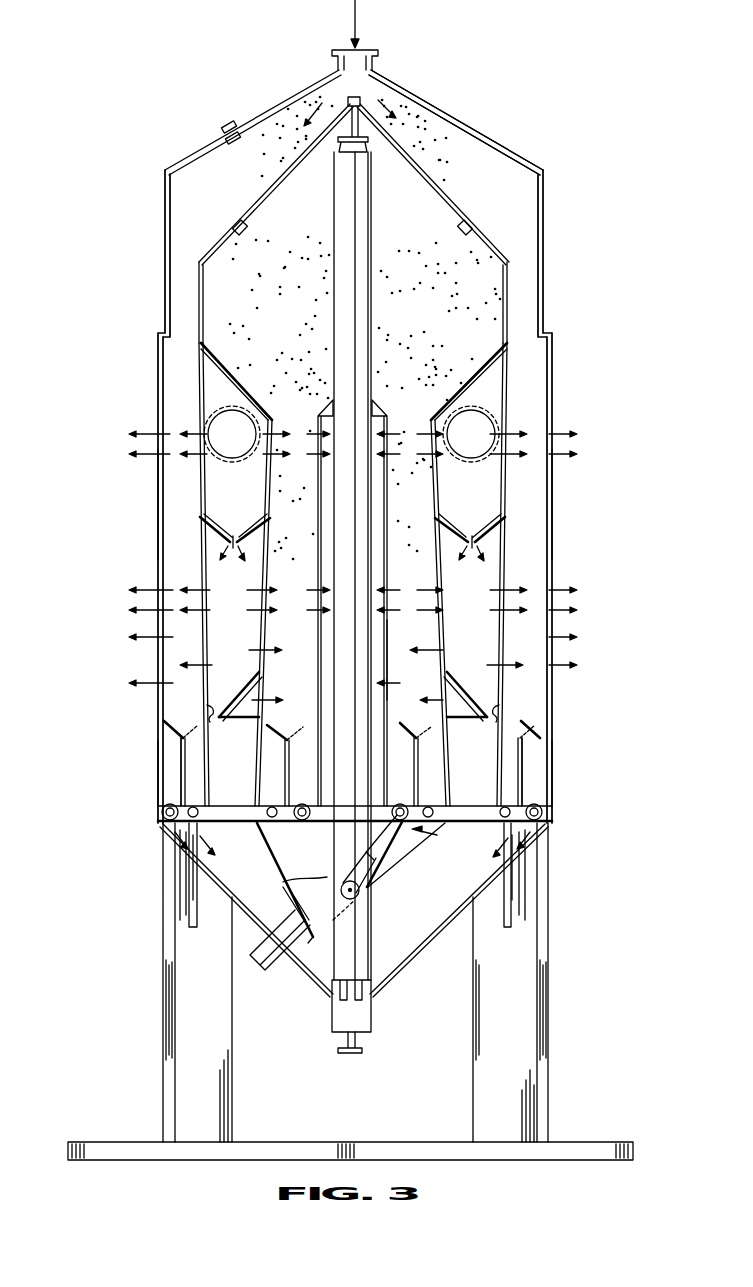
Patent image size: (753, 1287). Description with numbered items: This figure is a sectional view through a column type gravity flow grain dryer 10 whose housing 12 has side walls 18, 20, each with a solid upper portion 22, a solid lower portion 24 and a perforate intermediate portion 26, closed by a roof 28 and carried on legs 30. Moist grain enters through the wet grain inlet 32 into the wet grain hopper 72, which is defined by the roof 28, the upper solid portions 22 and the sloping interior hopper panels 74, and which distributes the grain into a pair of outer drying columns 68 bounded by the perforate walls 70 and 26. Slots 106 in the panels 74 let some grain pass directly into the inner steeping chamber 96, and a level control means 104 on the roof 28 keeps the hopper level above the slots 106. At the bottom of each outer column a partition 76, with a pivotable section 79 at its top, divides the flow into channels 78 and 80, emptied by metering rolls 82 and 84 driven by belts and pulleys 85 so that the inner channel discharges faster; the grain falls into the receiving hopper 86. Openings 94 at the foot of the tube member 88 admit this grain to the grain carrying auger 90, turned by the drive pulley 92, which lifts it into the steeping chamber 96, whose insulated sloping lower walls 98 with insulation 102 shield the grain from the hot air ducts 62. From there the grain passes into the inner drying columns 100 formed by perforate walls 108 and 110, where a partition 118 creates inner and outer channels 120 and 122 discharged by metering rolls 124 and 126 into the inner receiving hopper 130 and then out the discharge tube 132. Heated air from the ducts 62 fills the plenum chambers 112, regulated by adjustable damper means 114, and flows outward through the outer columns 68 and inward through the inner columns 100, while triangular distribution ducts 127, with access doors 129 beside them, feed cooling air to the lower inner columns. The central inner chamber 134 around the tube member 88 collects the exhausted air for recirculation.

The dryer 10 is at (418, 70).
The housing 12 is at (558, 288).
The side wall 18 is at (552, 402).
The side wall 20 is at (158, 376).
The upper solid portion 22 is at (166, 272).
The lower solid portion 24 is at (160, 777).
The perforate intermediate portion 26 is at (160, 510).
The roof 28 is at (472, 133).
The legs 30 is at (175, 942).
The wet grain inlet 32 is at (367, 50).
The hot air duct 62 is at (236, 412).
The outer drying column 68 is at (172, 414).
The perforate wall 70 is at (200, 488).
The wet grain hopper 72 is at (502, 175).
The sloping interior hopper panel 74 is at (303, 155).
The partition 76 is at (160, 766).
The channel 78 is at (160, 786).
The pivotable section 79 is at (176, 731).
The channel 80 is at (170, 726).
The metering roll 82 is at (162, 814).
The metering roll 84 is at (178, 835).
The drive belts and pulleys 85 is at (439, 839).
The receiving hopper 86 is at (427, 932).
The tube member 88 is at (369, 913).
The grain carrying auger 90 is at (365, 147).
The drive pulley 92 is at (349, 1052).
The openings 94 is at (360, 1003).
The inner chamber 96 is at (413, 305).
The sloping lower wall 98 is at (247, 394).
The inner drying column 100 is at (282, 562).
The insulation 102 is at (210, 370).
The level control means 104 is at (226, 130).
The slots 106 is at (236, 226).
The perforate wall 108 is at (259, 580).
The perforate wall 110 is at (318, 642).
The plenum chamber 112 is at (225, 510).
The adjustable damper means 114 is at (492, 516).
The partition 118 is at (285, 758).
The inner channel 120 is at (308, 737).
The outer channel 122 is at (287, 732).
The metering roll 124 is at (302, 820).
The metering roll 126 is at (270, 806).
The distribution duct 127 is at (258, 672).
The access door 129 is at (210, 712).
The inner receiving hopper 130 is at (410, 848).
The discharge tube 132 is at (283, 975).
The central inner chamber 134 is at (384, 640).